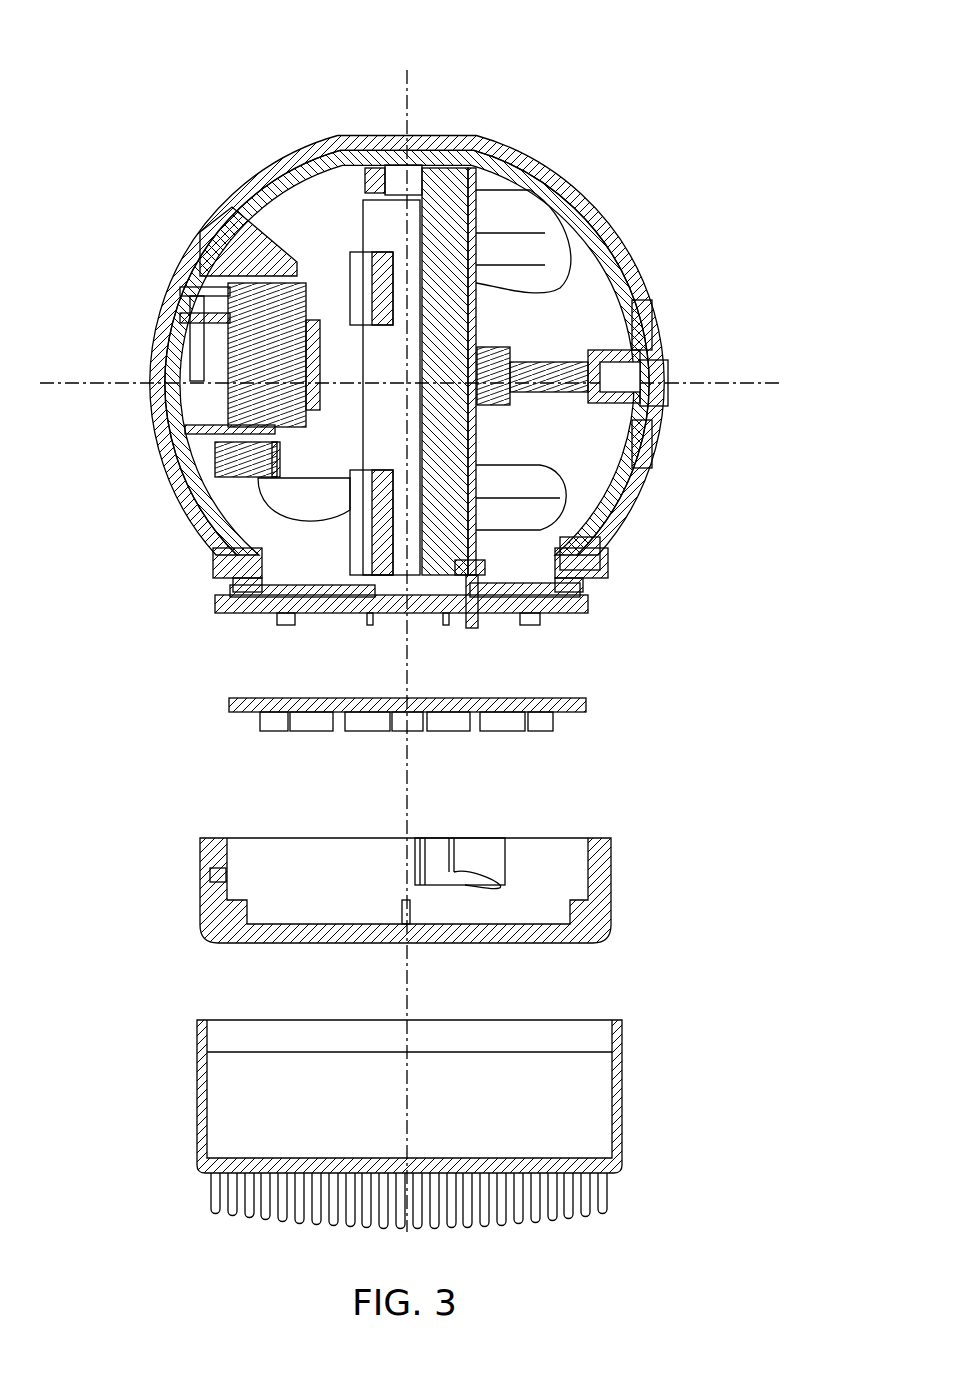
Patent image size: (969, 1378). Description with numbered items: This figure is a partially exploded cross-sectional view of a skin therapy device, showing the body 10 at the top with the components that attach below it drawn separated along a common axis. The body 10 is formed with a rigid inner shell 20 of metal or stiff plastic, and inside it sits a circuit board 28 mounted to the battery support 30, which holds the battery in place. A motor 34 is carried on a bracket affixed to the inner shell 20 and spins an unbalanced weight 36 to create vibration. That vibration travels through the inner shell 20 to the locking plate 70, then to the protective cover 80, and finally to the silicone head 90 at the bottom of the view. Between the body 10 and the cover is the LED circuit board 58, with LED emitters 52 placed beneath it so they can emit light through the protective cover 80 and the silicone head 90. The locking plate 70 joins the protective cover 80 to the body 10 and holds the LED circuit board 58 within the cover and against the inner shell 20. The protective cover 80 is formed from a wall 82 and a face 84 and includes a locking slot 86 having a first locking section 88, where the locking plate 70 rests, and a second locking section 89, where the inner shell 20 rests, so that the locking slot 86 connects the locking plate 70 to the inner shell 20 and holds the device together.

The body 10 is at (642, 74).
The inner shell 20 is at (650, 300).
The circuit board 28 is at (478, 290).
The battery support 30 is at (372, 168).
The motor 34 is at (230, 296).
The unbalanced weight 36 is at (215, 470).
The LED emitters 52 is at (508, 723).
The LED circuit board 58 is at (545, 706).
The locking plate 70 is at (258, 606).
The protective cover 80 is at (365, 898).
The wall 82 is at (605, 885).
The face 84 is at (545, 933).
The locking slot 86 is at (438, 878).
The first locking section 88 is at (490, 882).
The second locking section 89 is at (470, 880).
The silicone head 90 is at (197, 1163).